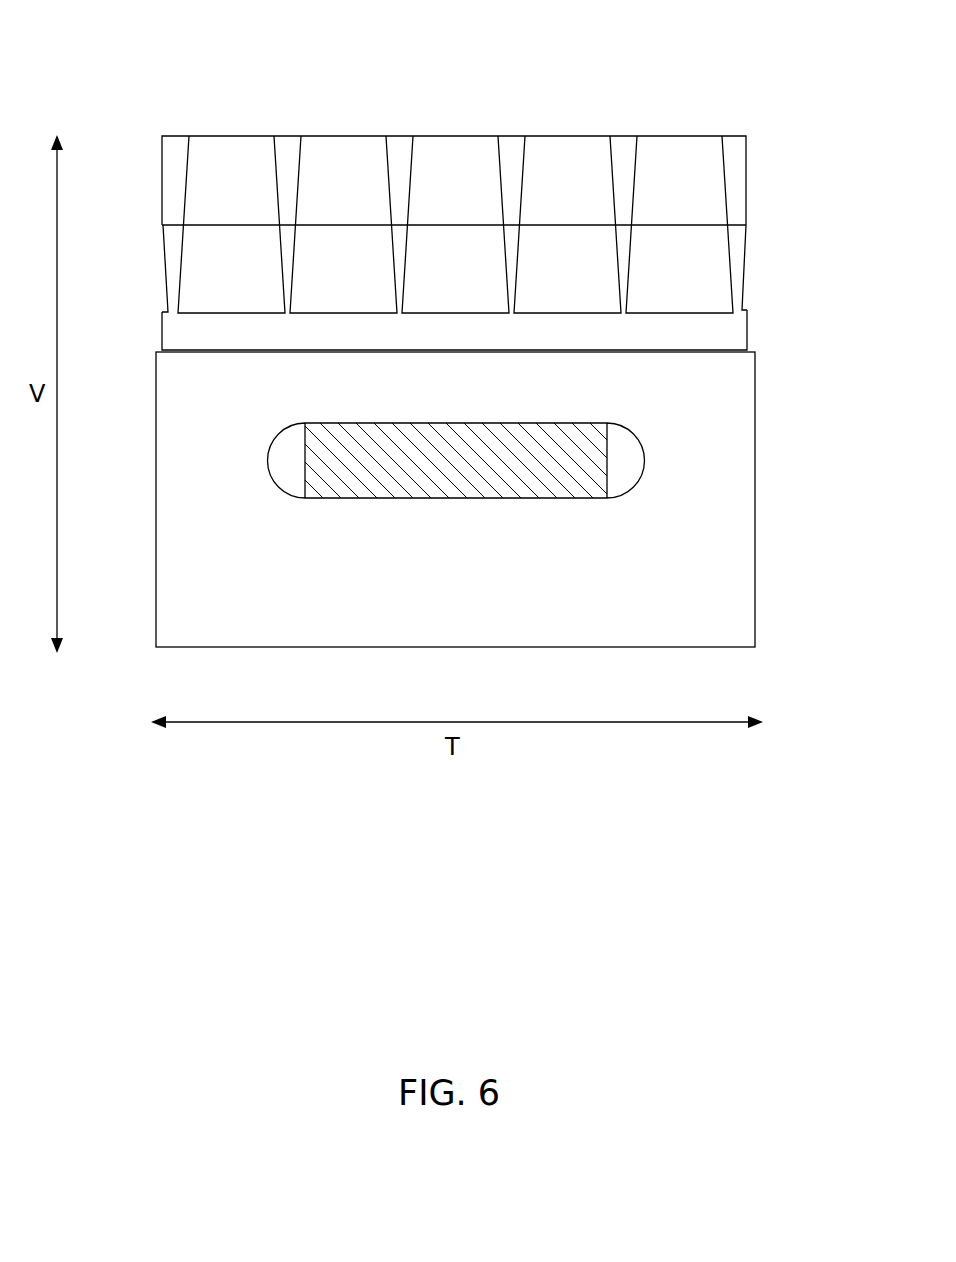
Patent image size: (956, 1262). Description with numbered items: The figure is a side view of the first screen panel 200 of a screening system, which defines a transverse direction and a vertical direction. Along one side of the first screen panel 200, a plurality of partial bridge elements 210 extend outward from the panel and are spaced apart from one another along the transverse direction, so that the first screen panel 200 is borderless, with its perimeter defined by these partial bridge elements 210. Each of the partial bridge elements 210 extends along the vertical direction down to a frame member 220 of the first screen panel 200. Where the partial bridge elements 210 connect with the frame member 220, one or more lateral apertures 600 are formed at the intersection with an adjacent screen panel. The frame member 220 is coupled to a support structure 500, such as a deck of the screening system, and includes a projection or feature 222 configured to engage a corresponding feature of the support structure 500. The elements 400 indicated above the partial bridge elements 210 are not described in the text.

The first screen panel 200 is at (751, 152).
The partial bridge elements 210 is at (167, 257).
The frame member 220 is at (753, 329).
The projection or feature 222 is at (607, 453).
The battery cell 400 is at (219, 122).
The support structure 500 is at (763, 594).
The lateral apertures 600 is at (210, 280).